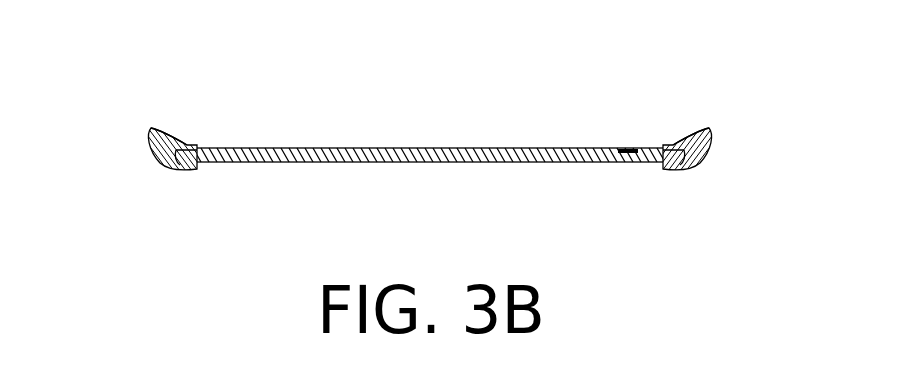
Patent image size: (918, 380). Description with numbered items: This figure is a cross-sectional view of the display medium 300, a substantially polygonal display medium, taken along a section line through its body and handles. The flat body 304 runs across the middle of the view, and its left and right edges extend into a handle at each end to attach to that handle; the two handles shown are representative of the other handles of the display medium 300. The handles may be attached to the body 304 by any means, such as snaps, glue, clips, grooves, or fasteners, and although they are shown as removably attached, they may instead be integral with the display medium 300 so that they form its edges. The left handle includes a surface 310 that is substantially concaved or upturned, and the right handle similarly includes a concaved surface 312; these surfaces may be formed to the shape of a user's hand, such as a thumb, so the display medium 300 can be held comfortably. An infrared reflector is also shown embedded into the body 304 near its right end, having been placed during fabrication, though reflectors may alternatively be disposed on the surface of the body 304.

The display medium 300 is at (655, 58).
The body 304 is at (390, 140).
The surface 310 is at (172, 143).
The surface 312 is at (690, 143).